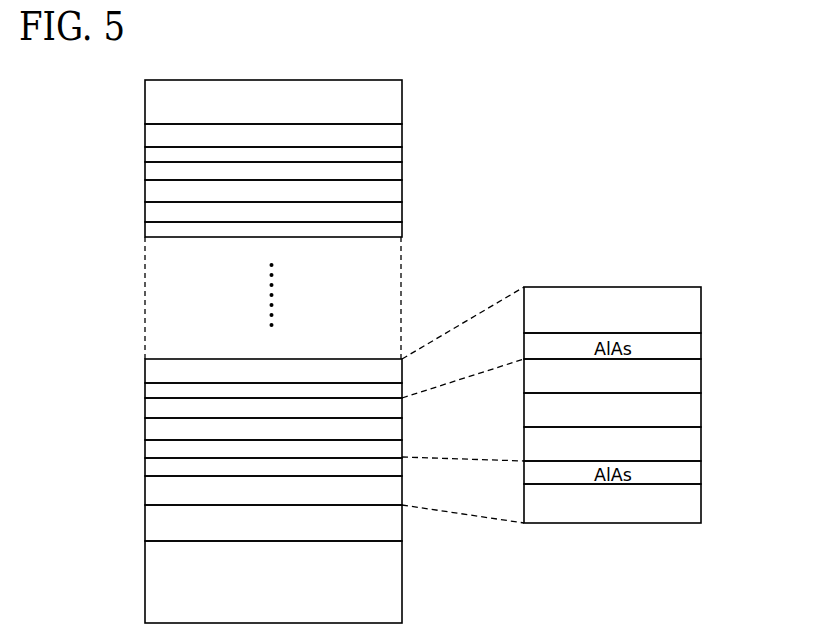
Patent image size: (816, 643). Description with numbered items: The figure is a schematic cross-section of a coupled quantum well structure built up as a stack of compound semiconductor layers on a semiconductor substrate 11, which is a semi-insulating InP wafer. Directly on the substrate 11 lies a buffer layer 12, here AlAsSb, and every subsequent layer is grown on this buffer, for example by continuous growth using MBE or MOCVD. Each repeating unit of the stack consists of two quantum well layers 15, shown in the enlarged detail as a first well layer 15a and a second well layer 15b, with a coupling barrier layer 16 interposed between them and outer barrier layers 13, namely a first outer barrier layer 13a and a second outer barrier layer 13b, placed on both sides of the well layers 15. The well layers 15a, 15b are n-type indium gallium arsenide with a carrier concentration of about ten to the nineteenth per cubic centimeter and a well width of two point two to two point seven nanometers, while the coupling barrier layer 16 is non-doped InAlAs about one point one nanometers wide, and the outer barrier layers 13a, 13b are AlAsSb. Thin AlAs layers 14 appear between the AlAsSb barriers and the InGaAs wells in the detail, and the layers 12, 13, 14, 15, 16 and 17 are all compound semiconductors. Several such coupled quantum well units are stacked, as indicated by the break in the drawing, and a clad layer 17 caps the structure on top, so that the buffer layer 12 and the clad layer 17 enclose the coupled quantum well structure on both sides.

The semiconductor substrate 11 is at (144, 582).
The buffer layer 12 is at (144, 522).
The outer barrier layer 13 is at (144, 135).
The AlAs layer 14 is at (144, 154).
The quantum well layer 15 is at (144, 173).
The coupling barrier layer 16 is at (144, 192).
The clad layer 17 is at (144, 100).
The outer barrier layer 13a is at (703, 504).
The outer barrier layer 13b is at (703, 310).
The quantum well layer 15a is at (703, 444).
The quantum well layer 15b is at (703, 376).